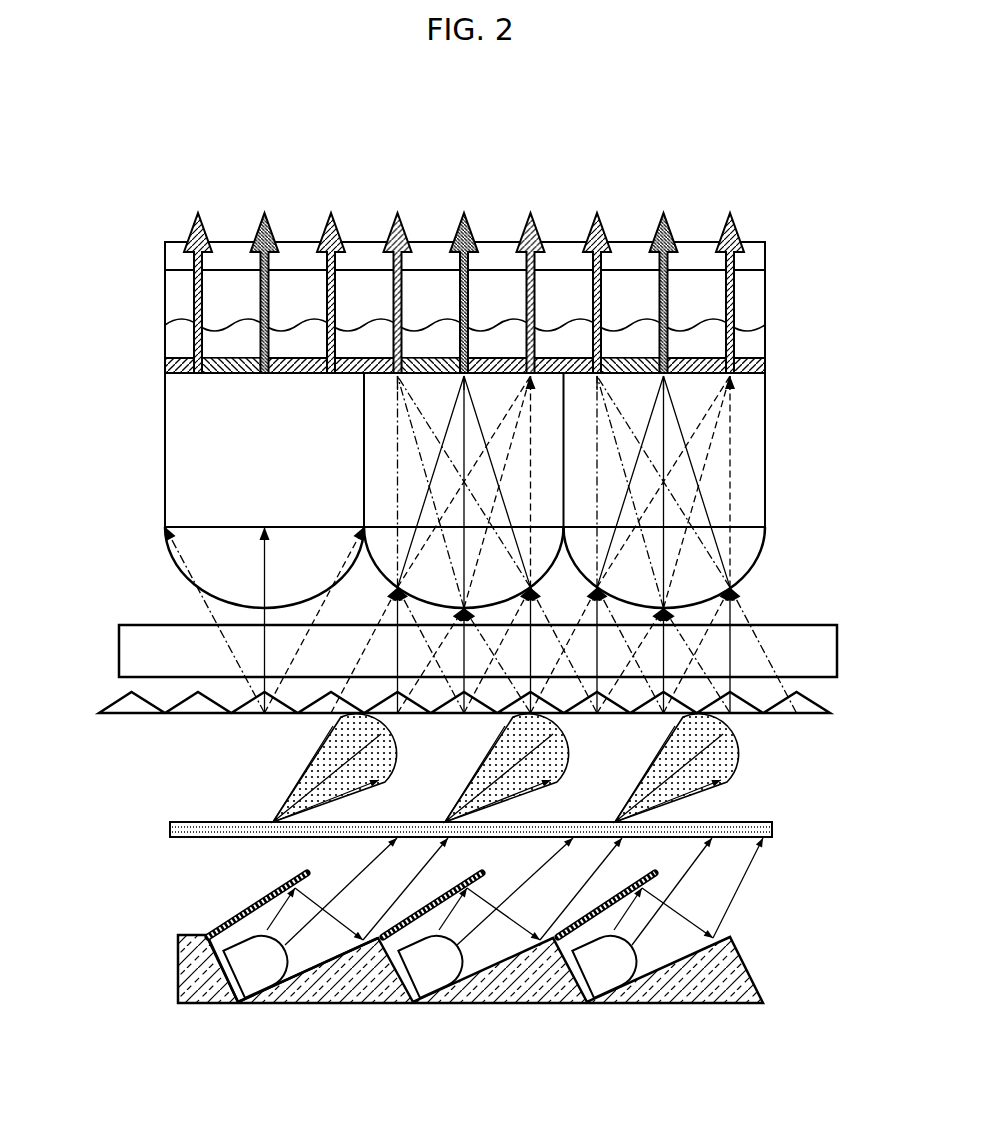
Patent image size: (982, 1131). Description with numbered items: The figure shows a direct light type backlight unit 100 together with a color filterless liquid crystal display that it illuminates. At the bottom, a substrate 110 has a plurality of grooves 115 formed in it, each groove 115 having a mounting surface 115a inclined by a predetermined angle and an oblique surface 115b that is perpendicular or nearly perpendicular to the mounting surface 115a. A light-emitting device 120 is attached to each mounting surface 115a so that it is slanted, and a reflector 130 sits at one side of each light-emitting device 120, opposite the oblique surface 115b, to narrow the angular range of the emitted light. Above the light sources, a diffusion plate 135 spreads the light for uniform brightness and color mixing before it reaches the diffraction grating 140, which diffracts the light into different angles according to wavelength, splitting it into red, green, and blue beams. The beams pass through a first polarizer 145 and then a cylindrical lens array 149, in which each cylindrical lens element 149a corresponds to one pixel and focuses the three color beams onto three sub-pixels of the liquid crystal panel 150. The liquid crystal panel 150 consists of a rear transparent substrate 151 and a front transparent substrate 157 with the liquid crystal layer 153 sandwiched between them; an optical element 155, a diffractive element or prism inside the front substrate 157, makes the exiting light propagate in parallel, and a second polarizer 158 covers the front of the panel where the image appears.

The backlight unit 100 is at (88, 678).
The substrate 110 is at (749, 972).
The groove 115 is at (330, 951).
The mounting surface 115a is at (220, 983).
The oblique surface 115b is at (300, 970).
The light-emitting device 120 is at (252, 968).
The reflector 130 is at (253, 905).
The diffusion plate 135 is at (775, 830).
The diffraction grating 140 is at (814, 711).
The first polarizer 145 is at (832, 653).
The cylindrical lens array 149 is at (758, 549).
The cylindrical lens element 149a is at (742, 578).
The liquid crystal panel 150 is at (132, 313).
The transparent substrate 151 is at (766, 460).
The liquid crystal layer 153 is at (770, 377).
The optical element 155 is at (766, 352).
The front transparent substrate 157 is at (766, 303).
The second polarizer 158 is at (766, 259).